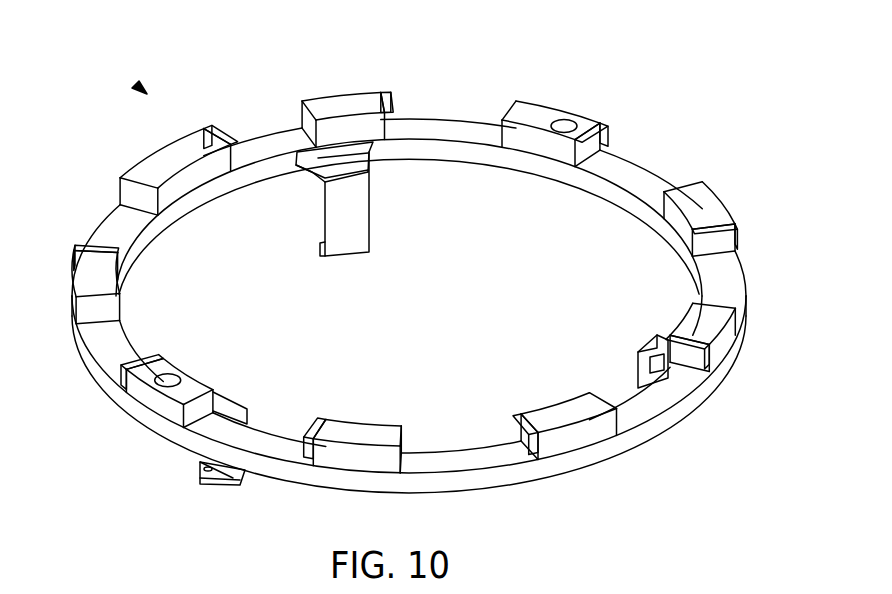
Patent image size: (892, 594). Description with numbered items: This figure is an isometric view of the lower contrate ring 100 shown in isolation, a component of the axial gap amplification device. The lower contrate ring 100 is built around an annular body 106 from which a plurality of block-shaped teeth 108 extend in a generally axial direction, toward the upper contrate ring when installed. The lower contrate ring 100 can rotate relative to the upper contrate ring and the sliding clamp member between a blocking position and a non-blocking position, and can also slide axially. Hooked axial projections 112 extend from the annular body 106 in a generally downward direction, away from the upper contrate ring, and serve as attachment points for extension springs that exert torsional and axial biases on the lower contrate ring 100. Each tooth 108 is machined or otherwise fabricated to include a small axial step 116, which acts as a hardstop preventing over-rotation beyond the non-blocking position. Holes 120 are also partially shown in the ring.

The lower contrate ring 100 is at (146, 93).
The annular body 106 is at (80, 350).
The block-shaped teeth 108 is at (147, 163).
The hooked axial projections 112 is at (353, 212).
The axial steps 116 is at (180, 145).
The holes 120 is at (567, 125).